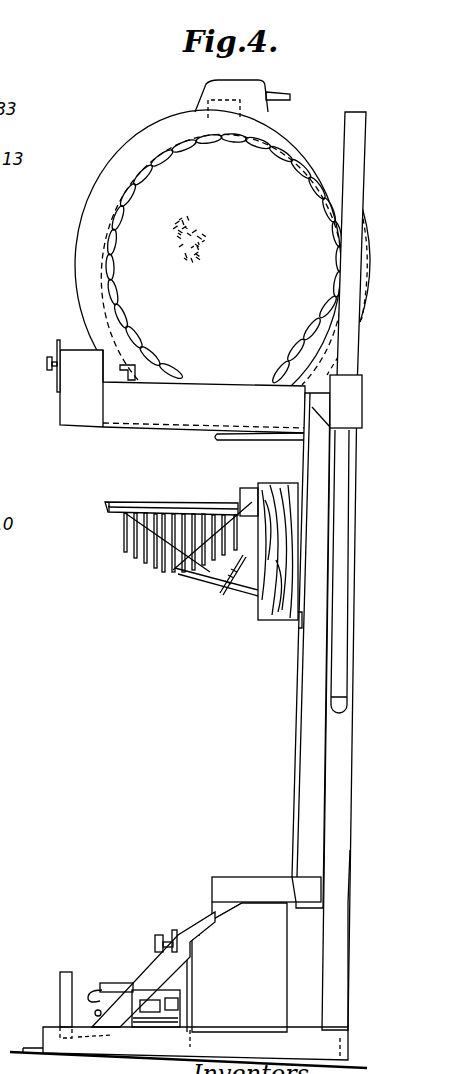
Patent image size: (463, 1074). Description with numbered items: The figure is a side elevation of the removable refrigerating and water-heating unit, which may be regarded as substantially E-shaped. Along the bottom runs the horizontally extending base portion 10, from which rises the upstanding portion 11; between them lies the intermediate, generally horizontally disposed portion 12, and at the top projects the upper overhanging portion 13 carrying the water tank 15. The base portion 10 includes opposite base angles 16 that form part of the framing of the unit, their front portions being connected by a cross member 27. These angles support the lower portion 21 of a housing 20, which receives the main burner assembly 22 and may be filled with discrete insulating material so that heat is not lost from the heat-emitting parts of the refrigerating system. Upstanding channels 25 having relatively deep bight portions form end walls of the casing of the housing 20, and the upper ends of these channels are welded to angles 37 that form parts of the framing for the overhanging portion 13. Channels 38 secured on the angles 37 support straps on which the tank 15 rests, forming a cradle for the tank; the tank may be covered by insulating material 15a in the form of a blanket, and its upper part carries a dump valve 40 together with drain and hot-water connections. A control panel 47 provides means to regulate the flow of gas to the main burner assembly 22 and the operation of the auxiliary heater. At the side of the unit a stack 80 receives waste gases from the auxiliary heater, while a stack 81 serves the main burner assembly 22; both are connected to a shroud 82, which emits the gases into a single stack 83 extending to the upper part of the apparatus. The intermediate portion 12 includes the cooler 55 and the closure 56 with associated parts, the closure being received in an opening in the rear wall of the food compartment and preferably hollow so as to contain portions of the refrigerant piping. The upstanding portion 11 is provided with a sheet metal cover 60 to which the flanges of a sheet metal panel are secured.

The base portion 10 is at (140, 916).
The upstanding portion 11 is at (284, 752).
The intermediate horizontal portion 12 is at (152, 580).
The upper overhanging portion 13 is at (105, 145).
The water tank 15 is at (82, 292).
The insulating material 15a is at (86, 318).
The base angles 16 is at (282, 1045).
The housing 20 is at (353, 884).
The lower portion of housing 21 is at (237, 967).
The main burner assembly 22 is at (187, 1003).
The upstanding channels 25 is at (340, 952).
The cross member 27 is at (62, 982).
The angles 37 is at (165, 418).
The channels 38 is at (126, 380).
The dump valve 40 is at (208, 90).
The control panel 47 is at (57, 380).
The cooler 55 is at (165, 502).
The closure 56 is at (265, 605).
The sheet metal cover 60 is at (305, 456).
The stack 80 is at (312, 660).
The stack 81 is at (344, 567).
The shroud 82 is at (342, 401).
The stack 83 is at (356, 140).